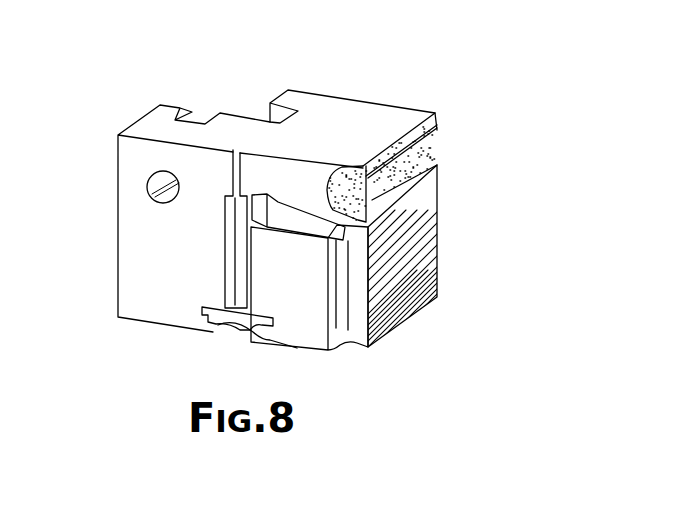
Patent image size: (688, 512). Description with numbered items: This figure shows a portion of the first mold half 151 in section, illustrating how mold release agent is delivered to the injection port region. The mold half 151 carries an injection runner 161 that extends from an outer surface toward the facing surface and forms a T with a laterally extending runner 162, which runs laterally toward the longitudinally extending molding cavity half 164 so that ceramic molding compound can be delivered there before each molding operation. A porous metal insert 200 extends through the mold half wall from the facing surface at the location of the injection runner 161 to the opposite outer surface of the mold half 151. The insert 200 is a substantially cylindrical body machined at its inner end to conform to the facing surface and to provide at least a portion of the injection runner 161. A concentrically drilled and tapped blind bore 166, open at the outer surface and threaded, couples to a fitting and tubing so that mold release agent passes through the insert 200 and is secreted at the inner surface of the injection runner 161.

The first mold half 151 is at (140, 280).
The injection runner 161 is at (350, 180).
The laterally extending runner 162 is at (283, 220).
The molding cavity half 164 is at (232, 252).
The blind bore 166 is at (430, 160).
The porous metal insert 200 is at (372, 178).